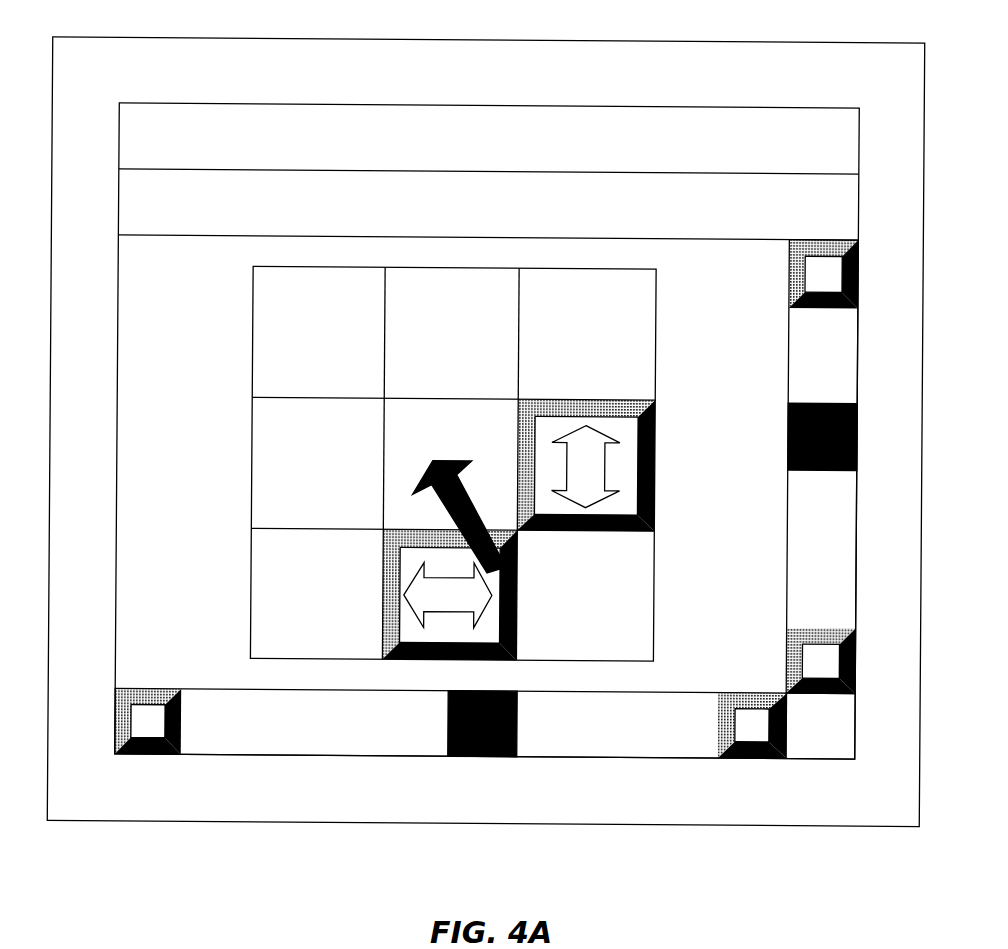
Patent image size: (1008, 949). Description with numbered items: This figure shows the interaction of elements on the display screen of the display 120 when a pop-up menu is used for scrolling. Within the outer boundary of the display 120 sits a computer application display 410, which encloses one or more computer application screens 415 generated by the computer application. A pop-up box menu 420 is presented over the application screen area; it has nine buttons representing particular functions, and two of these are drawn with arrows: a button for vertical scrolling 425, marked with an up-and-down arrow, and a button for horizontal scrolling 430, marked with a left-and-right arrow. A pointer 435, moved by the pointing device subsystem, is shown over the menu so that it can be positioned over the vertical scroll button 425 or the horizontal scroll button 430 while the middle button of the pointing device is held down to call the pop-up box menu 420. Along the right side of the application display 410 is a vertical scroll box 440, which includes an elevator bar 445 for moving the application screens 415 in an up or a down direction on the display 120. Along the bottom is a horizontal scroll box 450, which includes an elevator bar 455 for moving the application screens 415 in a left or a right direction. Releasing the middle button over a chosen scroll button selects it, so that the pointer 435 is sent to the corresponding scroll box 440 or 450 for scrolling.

The display 120 is at (527, 40).
The computer application display 410 is at (705, 104).
The computer application screen 415 is at (452, 464).
The pop-up box menu 420 is at (250, 295).
The vertical scroll button 425 is at (655, 456).
The horizontal scroll button 430 is at (488, 657).
The pointer 435 is at (473, 488).
The vertical scroll box 440 is at (834, 343).
The elevator bar 445 is at (853, 463).
The horizontal scroll box 450 is at (330, 739).
The elevator bar 455 is at (509, 762).